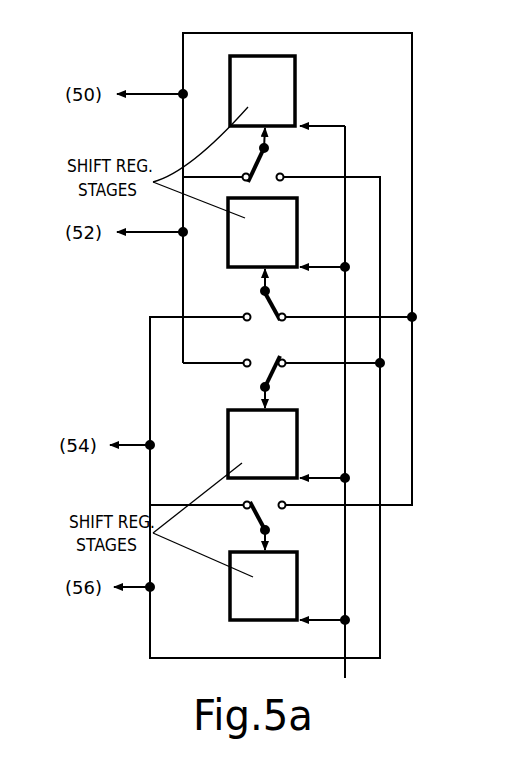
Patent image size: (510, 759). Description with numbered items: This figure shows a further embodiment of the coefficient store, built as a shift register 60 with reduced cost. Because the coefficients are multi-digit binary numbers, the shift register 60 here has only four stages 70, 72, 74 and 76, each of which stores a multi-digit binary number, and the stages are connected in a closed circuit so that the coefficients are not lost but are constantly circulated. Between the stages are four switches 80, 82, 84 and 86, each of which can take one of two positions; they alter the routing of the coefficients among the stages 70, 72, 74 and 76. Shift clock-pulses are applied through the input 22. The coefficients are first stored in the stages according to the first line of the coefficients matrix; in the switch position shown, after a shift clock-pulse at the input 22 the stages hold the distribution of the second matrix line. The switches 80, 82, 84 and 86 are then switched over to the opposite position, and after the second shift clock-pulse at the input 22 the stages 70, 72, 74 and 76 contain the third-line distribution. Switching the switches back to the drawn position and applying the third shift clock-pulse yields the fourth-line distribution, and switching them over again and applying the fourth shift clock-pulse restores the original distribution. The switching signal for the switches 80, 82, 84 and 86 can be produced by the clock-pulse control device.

The shift register 60 is at (85, 352).
The input 22 is at (338, 406).
The shift register stage 70 is at (287, 91).
The shift register stage 72 is at (293, 237).
The shift register stage 74 is at (292, 447).
The shift register stage 76 is at (288, 595).
The switch 80 is at (274, 299).
The switch 82 is at (268, 373).
The switch 84 is at (297, 145).
The switch 86 is at (255, 518).